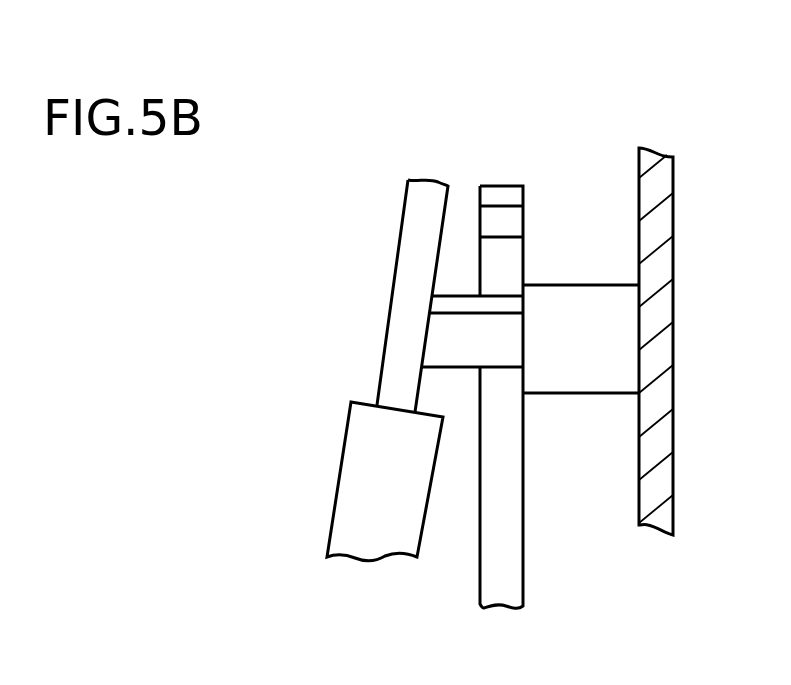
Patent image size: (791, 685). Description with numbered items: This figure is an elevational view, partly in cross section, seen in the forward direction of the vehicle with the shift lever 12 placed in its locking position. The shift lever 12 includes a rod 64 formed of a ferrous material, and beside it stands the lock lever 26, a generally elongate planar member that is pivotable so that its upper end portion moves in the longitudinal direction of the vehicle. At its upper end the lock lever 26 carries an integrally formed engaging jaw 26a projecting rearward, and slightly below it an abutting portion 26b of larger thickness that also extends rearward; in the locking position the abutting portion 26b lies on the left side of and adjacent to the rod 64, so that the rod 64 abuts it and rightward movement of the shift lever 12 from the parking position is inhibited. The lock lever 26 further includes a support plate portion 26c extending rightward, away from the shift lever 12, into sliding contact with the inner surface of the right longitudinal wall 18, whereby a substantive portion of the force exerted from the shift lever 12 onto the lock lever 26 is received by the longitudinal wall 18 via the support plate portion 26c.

The shift lever 12 is at (354, 218).
The rod 64 is at (410, 265).
The lock lever 26 is at (517, 163).
The engaging jaw 26a is at (502, 202).
The abutting portion 26b is at (447, 350).
The support plate portion 26c is at (578, 360).
The longitudinal wall 18 is at (660, 257).